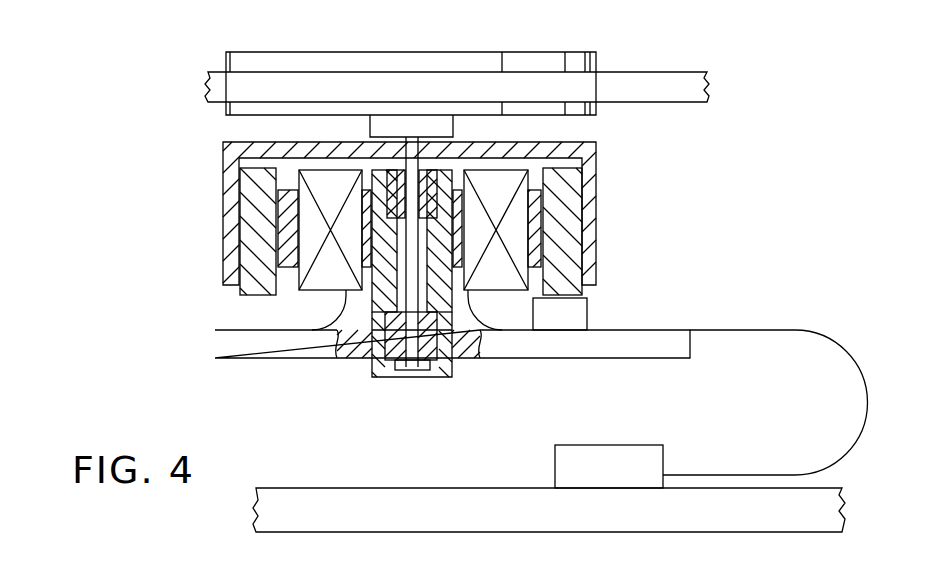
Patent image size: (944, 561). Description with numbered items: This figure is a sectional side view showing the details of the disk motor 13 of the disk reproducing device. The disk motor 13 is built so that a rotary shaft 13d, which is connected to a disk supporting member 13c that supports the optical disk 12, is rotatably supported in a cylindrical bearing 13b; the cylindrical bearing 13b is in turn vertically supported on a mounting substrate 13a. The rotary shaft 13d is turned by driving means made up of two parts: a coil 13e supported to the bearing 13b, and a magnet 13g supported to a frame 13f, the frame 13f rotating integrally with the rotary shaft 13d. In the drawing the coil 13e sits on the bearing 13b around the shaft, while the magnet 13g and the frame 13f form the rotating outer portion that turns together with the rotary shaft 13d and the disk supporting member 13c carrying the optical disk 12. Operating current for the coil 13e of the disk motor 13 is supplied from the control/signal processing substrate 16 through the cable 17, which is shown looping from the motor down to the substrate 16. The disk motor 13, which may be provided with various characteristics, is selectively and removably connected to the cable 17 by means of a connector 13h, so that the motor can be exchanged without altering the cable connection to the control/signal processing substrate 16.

The optical disk 12 is at (664, 72).
The disk motor 13 is at (212, 221).
The mounting substrate 13a is at (255, 358).
The cylindrical bearing 13b is at (453, 375).
The disk supporting member 13c is at (596, 113).
The rotary shaft 13d is at (410, 370).
The coil 13e is at (500, 291).
The frame 13f is at (597, 183).
The magnet 13g is at (566, 270).
The connector 13h is at (575, 316).
The control/signal processing substrate 16 is at (455, 488).
The cable 17 is at (769, 330).